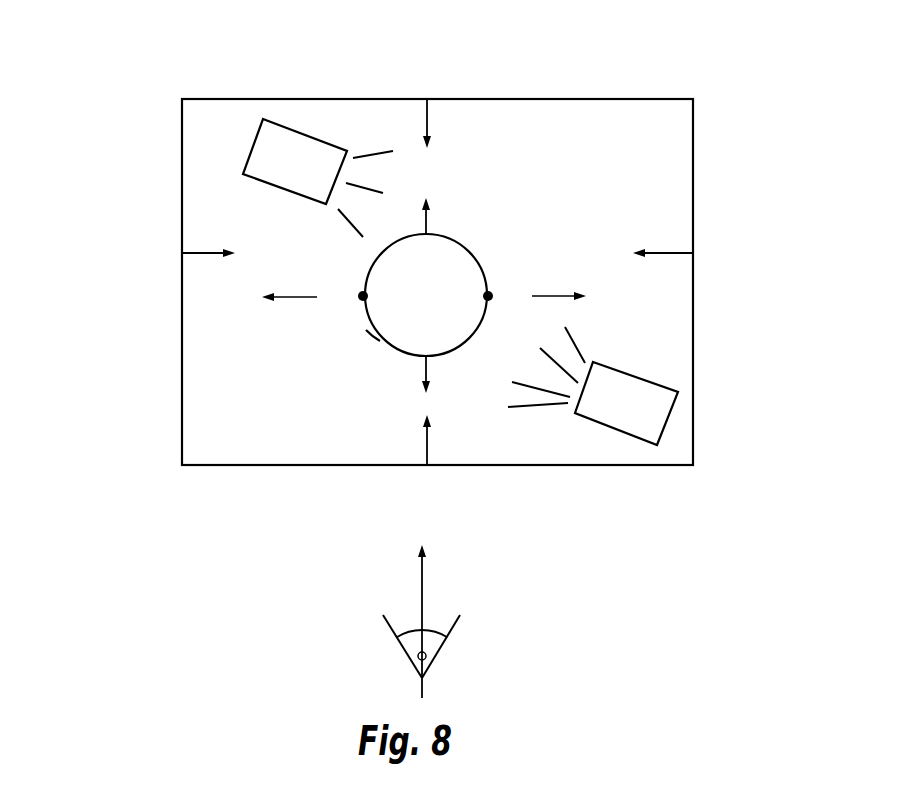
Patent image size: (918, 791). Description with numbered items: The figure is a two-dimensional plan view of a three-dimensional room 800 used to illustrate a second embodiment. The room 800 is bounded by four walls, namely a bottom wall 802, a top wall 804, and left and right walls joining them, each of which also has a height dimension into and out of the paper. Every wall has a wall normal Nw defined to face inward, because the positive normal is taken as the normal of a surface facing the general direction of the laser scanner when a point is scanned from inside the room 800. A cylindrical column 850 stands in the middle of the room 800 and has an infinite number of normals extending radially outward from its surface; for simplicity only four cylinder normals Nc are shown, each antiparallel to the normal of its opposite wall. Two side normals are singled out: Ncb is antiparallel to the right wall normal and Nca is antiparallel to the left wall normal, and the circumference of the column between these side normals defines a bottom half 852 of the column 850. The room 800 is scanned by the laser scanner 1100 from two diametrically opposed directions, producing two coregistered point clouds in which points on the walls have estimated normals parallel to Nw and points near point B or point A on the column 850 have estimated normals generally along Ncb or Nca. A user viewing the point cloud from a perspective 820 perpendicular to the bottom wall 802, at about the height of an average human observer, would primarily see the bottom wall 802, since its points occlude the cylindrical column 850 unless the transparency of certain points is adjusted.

The room 800 is at (694, 127).
The bottom wall 802 is at (615, 465).
The top wall 804 is at (638, 99).
The perspective 820 is at (425, 607).
The cylindrical column 850 is at (438, 307).
The bottom half of the column 852 is at (362, 331).
The laser scanner 1100 is at (309, 169).
The wall normal Nw is at (427, 118).
The cylinder normal Nc is at (426, 228).
The cylinder normal at point A Nca is at (278, 298).
The cylinder normal at point B Ncb is at (571, 298).